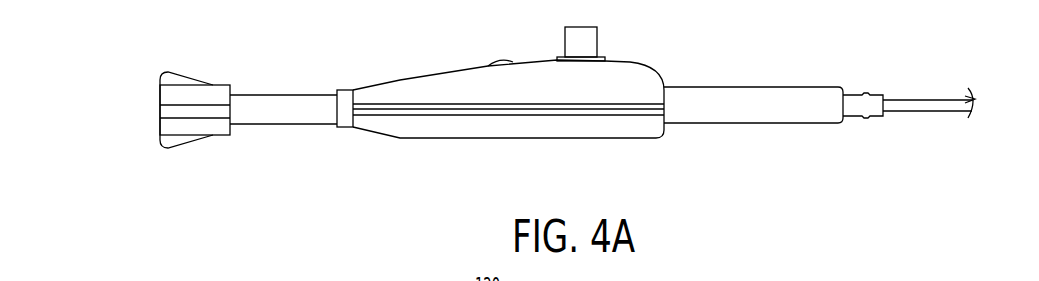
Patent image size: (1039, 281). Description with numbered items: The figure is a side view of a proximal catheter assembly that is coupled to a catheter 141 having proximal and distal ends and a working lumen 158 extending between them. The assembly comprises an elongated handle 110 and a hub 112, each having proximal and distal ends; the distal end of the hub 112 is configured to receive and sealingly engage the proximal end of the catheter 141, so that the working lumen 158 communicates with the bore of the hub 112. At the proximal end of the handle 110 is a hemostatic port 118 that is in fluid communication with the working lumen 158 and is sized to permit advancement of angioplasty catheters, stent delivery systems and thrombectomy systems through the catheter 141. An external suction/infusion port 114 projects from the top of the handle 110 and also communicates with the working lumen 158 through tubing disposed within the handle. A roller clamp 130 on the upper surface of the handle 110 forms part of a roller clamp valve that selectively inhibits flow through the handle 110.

The handle 110 is at (516, 143).
The hub 112 is at (726, 129).
The external suction/infusion port 114 is at (597, 38).
The hemostatic port 118 is at (183, 148).
The roller clamp 130 is at (503, 60).
The catheter 141 is at (942, 111).
The working lumen 158 is at (975, 99).